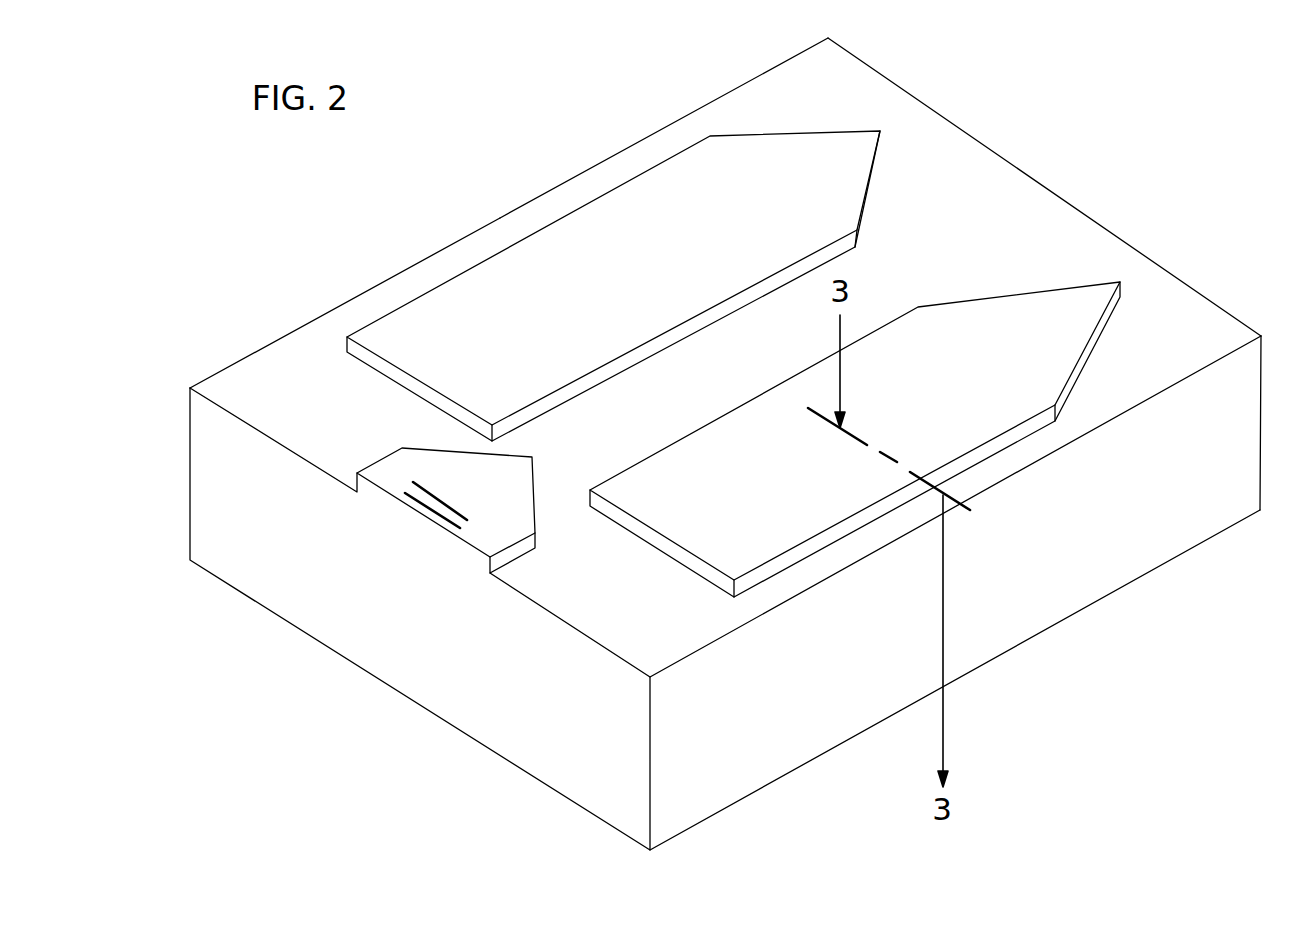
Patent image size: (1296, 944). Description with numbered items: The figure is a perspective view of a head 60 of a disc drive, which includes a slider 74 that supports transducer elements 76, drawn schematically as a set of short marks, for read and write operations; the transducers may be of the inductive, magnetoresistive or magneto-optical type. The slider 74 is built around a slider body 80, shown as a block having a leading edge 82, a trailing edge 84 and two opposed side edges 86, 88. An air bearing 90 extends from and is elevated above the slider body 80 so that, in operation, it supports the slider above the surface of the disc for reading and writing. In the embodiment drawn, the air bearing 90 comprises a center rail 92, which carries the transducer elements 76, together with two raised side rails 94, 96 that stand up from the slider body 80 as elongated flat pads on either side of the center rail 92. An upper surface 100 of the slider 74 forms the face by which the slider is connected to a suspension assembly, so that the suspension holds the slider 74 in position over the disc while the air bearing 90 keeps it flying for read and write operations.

The head 60 is at (1065, 164).
The slider 74 is at (710, 102).
The transducer elements 76 is at (437, 513).
The slider body 80 is at (1163, 308).
The leading edge 82 is at (1092, 217).
The trailing edge 84 is at (302, 458).
The side edge 86 is at (382, 282).
The side edge 88 is at (697, 650).
The air bearing 90 is at (978, 335).
The center rail 92 is at (465, 492).
The raised side rail 94 is at (538, 325).
The raised side rail 96 is at (755, 506).
The upper surface 100 is at (1120, 587).